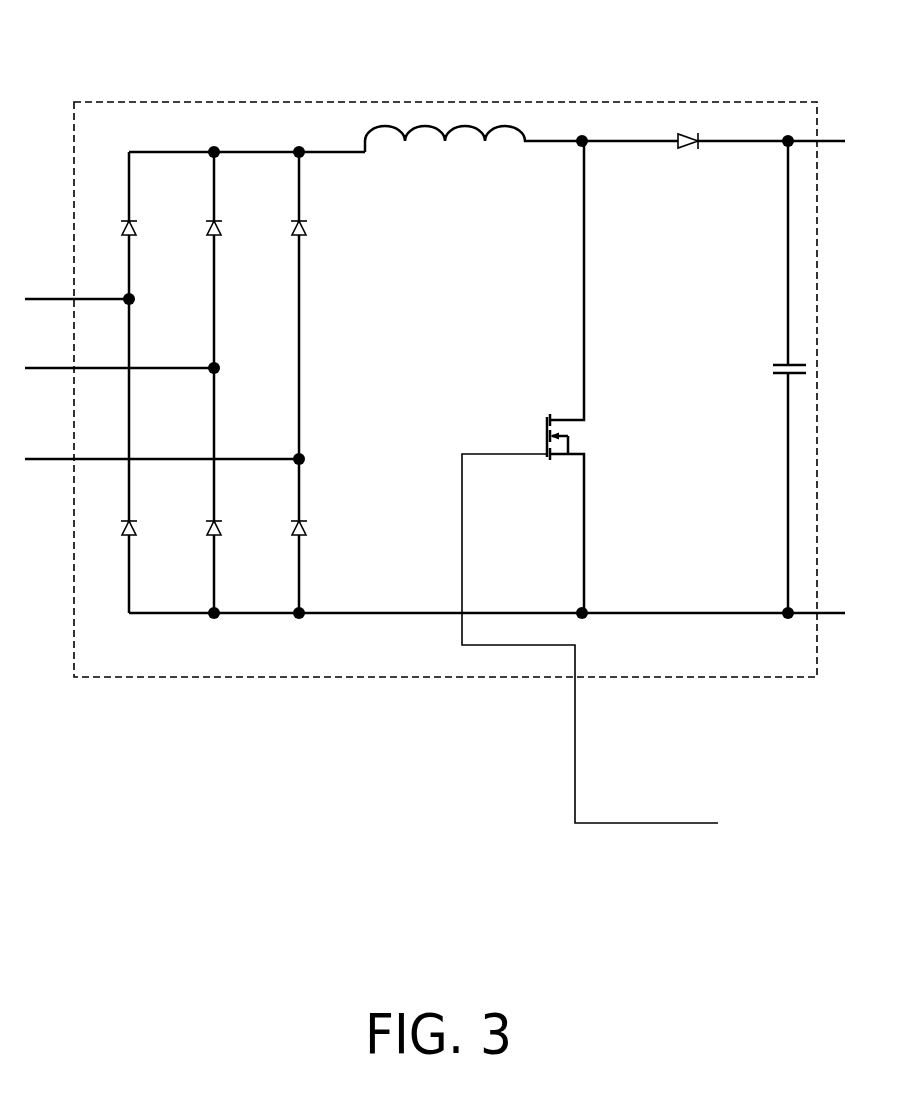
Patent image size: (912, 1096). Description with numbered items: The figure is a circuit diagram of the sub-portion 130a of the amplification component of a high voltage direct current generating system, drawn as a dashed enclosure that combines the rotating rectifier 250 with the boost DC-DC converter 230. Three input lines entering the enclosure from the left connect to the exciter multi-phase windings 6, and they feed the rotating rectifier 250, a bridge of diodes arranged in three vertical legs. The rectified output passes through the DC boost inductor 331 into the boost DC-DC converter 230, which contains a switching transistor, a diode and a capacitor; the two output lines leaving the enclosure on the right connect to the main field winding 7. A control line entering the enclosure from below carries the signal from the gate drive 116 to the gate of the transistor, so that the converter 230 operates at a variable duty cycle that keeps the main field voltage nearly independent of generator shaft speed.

The sub-portion 130a is at (151, 138).
The rotating rectifier 250 is at (325, 348).
The DC boost inductor 331 is at (463, 163).
The boost DC-DC converter 230 is at (393, 280).
The main field winding 7 is at (827, 722).
The exciter multi-phase windings 6 is at (38, 368).
The gate drive 116 is at (766, 824).